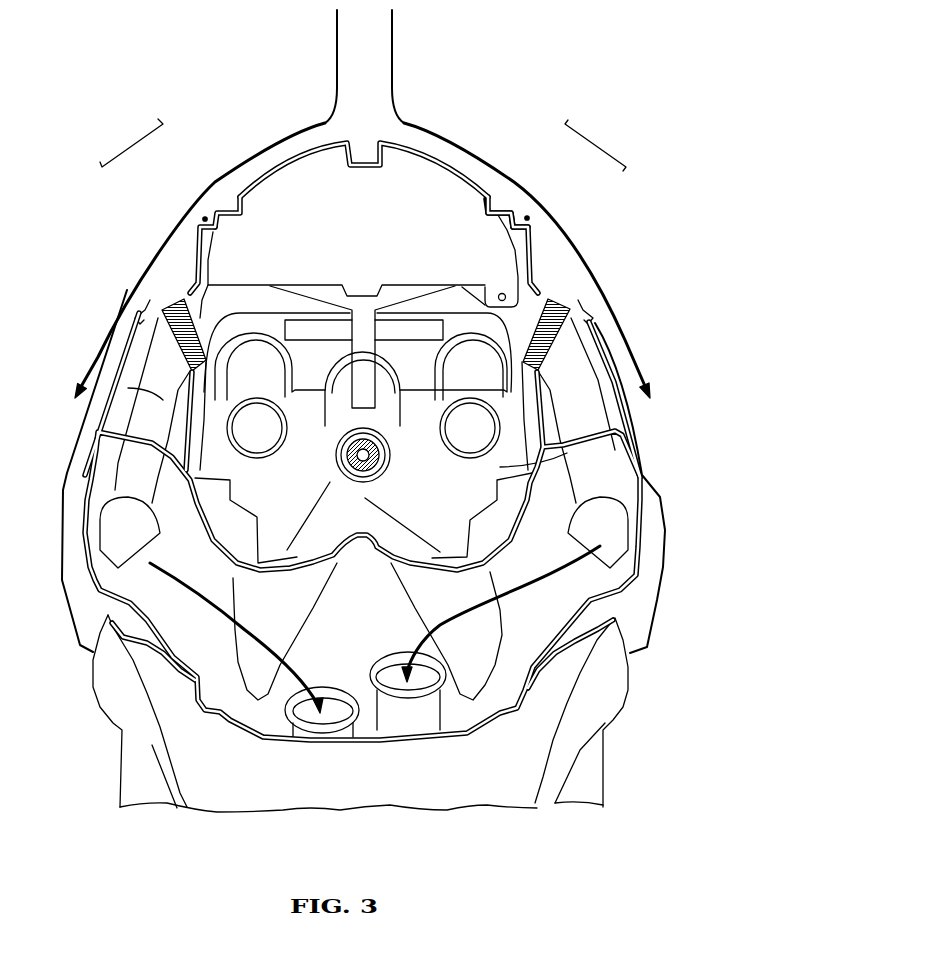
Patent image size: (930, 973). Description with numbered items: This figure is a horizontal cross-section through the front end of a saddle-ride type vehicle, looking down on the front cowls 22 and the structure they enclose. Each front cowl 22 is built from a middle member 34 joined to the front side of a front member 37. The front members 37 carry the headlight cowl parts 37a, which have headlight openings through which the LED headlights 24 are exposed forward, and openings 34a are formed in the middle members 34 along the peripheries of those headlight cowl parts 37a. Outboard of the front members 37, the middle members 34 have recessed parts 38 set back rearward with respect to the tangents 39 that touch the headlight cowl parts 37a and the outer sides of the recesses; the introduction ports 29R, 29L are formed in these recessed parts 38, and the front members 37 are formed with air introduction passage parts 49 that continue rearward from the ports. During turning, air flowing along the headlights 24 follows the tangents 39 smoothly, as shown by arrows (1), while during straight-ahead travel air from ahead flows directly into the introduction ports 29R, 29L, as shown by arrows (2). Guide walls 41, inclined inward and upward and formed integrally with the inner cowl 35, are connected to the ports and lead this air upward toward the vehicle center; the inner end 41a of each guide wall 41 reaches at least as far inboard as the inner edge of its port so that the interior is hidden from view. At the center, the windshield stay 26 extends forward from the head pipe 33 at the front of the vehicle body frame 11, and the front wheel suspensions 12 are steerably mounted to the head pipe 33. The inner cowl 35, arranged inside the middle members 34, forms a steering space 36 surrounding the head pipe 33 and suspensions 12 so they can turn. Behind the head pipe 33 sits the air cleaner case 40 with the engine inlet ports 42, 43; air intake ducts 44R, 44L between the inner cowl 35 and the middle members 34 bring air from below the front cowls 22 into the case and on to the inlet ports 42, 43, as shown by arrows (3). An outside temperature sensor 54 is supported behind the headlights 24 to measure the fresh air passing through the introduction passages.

The arrows (air flow along tangents during turning) 1 is at (338, 47).
The arrows (air flow into introduction ports during straight-ahead traveling) 2 is at (198, 328).
The arrows (intake air flow to inlet ports) 3 is at (243, 622).
The vehicle body frame 11 is at (407, 510).
The front wheel suspensions 12 is at (467, 463).
The front cowls 22 is at (130, 141).
The headlights 24 is at (400, 143).
The windshield stay 26 is at (368, 330).
The introduction port (left) 29L is at (153, 280).
The introduction port (right) 29R is at (592, 272).
The head pipe 33 is at (346, 468).
The middle members 34 is at (202, 238).
The openings 34a is at (500, 222).
The inner cowl 35 is at (185, 450).
The steering space 36 is at (250, 497).
The front members 37 is at (223, 207).
The headlight cowl parts 37a is at (486, 201).
The recessed parts 38 is at (182, 272).
The tangents 39 is at (203, 218).
The air cleaner case 40 is at (97, 587).
The guide walls 41 is at (150, 292).
The inner end of the guide wall 41a is at (182, 372).
The inlet port 42 is at (333, 693).
The inlet port 43 is at (393, 658).
The air intake duct (left) 44L is at (112, 482).
The air intake duct (right) 44R is at (603, 463).
The air introduction passage parts 49 is at (180, 274).
The outside temperature sensor 54 is at (499, 292).